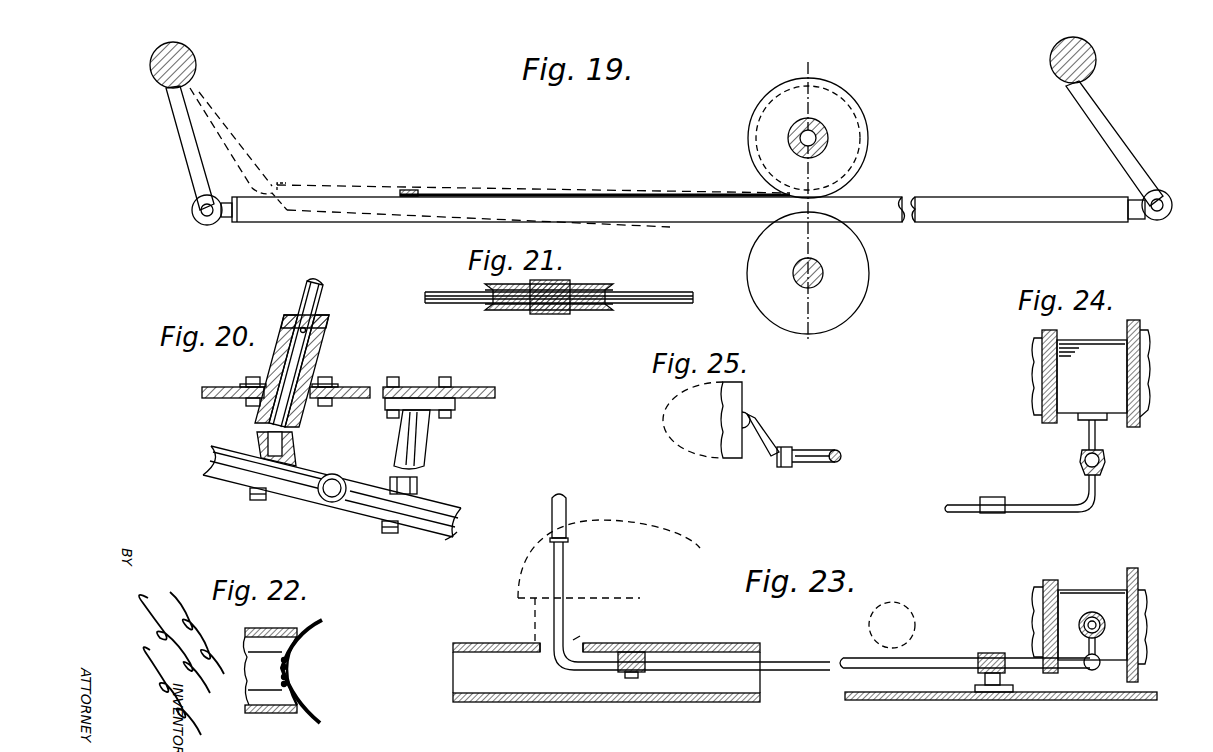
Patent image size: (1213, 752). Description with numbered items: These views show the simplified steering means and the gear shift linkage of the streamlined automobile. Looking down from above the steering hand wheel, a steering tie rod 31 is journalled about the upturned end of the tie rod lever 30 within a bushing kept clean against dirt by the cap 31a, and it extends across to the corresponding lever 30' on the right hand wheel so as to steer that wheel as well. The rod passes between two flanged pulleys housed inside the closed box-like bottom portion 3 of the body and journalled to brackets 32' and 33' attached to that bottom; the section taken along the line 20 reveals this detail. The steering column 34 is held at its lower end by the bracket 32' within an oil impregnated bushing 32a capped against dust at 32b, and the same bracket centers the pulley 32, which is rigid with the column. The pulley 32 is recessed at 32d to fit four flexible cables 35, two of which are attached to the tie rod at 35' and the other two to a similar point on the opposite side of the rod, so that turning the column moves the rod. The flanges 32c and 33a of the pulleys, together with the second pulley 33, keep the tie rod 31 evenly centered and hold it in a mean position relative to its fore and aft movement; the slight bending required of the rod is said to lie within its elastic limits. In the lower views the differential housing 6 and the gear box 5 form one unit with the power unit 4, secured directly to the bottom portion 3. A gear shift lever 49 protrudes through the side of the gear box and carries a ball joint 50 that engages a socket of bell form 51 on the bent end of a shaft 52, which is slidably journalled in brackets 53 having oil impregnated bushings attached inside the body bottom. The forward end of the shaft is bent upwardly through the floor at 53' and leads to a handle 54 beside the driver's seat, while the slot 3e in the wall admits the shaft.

In FIG. 23, the bottom portion 3 is at (700, 700).
In FIG. 23, the slot in housing wall 3e is at (658, 645).
In FIG. 23, the power unit 4 is at (1142, 612).
In FIG. 24, the power unit 4 is at (1146, 399).
In FIG. 23, the gear box 5 is at (1080, 598).
In FIG. 24, the gear box 5 is at (1110, 366).
In FIG. 23, the differential housing 6 is at (1040, 610).
In FIG. 24, the differential housing 6 is at (1032, 385).
In FIG. 19, the section line 20 is at (809, 206).
In FIG. 19, the tie rod lever 30 is at (179, 126).
In FIG. 19, the lever on right hand wheel 30' is at (1111, 128).
In FIG. 19, the steering tie rod 31 is at (882, 197).
In FIG. 20, the steering tie rod 31 is at (338, 480).
In FIG. 19, the cap 31a is at (207, 225).
In FIG. 19, the pulley 32 is at (822, 138).
In FIG. 20, the pulley 32 is at (333, 482).
In FIG. 19, the bracket 32' is at (853, 146).
In FIG. 20, the bracket 32' is at (287, 380).
In FIG. 20, the oil impregnated bushing 32a is at (318, 353).
In FIG. 20, the cap 32b is at (318, 324).
In FIG. 22, the flange 32c is at (330, 627).
In FIG. 22, the recess 32d is at (290, 663).
In FIG. 19, the flanged pulley 33 is at (825, 273).
In FIG. 20, the flanged pulley 33 is at (346, 491).
In FIG. 20, the bracket 33' is at (444, 423).
In FIG. 20, the flange 33a is at (445, 540).
In FIG. 19, the steering column 34 is at (818, 128).
In FIG. 20, the steering column 34 is at (322, 302).
In FIG. 19, the flexible cables 35 is at (490, 157).
In FIG. 21, the flexible cables 35 is at (559, 300).
In FIG. 22, the flexible cables 35 is at (306, 677).
In FIG. 19, the cable attachment point 35' is at (423, 175).
In FIG. 23, the gear shift lever 49 is at (1098, 636).
In FIG. 24, the gear shift lever 49 is at (1098, 448).
In FIG. 25, the gear shift lever 49 is at (766, 438).
In FIG. 24, the ball joint 50 is at (1104, 470).
In FIG. 23, the socket of bell form 51 is at (1092, 671).
In FIG. 24, the socket of bell form 51 is at (1084, 465).
In FIG. 25, the socket of bell form 51 is at (794, 452).
In FIG. 23, the shaft 52 is at (940, 658).
In FIG. 24, the shaft 52 is at (1060, 510).
In FIG. 25, the shaft 52 is at (840, 466).
In FIG. 23, the brackets 53 is at (810, 661).
In FIG. 23, the upward bend of shaft 53' is at (594, 627).
In FIG. 23, the handle 54 is at (568, 522).